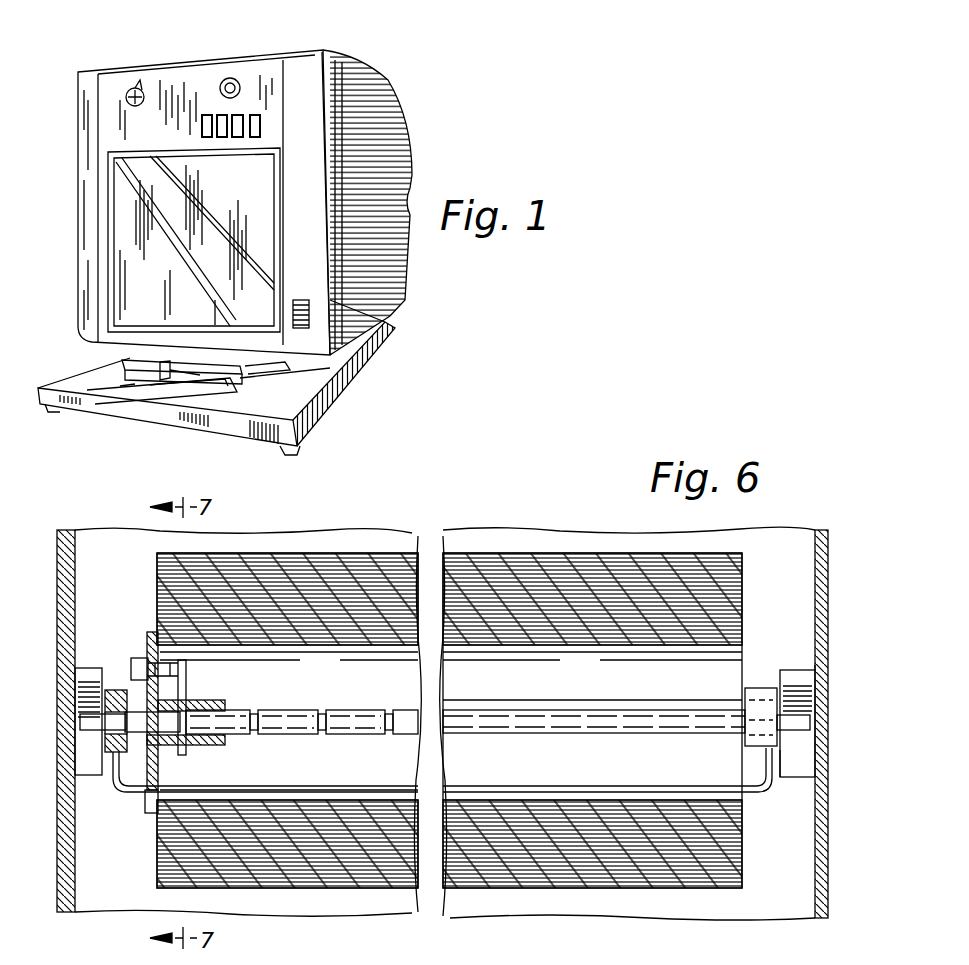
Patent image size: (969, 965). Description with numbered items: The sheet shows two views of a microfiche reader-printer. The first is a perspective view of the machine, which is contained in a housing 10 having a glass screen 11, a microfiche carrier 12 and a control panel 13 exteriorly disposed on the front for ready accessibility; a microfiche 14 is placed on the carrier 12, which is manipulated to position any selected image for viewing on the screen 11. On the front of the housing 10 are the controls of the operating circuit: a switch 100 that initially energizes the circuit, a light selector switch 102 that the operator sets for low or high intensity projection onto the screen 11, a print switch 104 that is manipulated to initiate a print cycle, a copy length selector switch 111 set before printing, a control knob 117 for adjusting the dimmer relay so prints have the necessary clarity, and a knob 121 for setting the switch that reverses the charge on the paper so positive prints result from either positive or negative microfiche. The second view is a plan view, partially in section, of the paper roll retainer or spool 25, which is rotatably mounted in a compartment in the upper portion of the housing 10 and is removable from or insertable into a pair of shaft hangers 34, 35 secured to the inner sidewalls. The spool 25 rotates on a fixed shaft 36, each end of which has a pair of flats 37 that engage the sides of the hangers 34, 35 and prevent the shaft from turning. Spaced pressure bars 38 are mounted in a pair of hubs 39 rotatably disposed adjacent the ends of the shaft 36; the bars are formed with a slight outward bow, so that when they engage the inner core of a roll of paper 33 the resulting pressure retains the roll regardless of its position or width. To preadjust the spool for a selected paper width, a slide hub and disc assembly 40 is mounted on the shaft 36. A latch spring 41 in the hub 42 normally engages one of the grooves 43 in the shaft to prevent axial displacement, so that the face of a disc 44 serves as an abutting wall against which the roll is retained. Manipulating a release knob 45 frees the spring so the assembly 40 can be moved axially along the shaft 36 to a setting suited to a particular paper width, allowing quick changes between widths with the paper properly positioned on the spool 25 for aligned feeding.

In FIG. 1, the housing 10 is at (372, 115).
In FIG. 6, the housing 10 is at (785, 810).
In FIG. 1, the glass screen 11 is at (132, 255).
In FIG. 1, the microfiche carrier 12 is at (195, 392).
In FIG. 1, the control panel 13 is at (164, 88).
In FIG. 1, the microfiche 14 is at (130, 352).
In FIG. 1, the switch 100 is at (262, 118).
In FIG. 1, the light selector switch 102 is at (214, 112).
In FIG. 1, the print switch 104 is at (244, 116).
In FIG. 1, the copy length selector switch 111 is at (200, 130).
In FIG. 1, the control knob 117 is at (233, 80).
In FIG. 1, the knob 121 is at (125, 102).
In FIG. 6, the paper roll retainer or spool 25 is at (538, 553).
In FIG. 6, the roll of paper 33 is at (738, 855).
In FIG. 6, the shaft hanger 34 is at (78, 708).
In FIG. 6, the shaft hanger 35 is at (805, 680).
In FIG. 6, the fixed shaft 36 is at (520, 712).
In FIG. 6, the flats 37 is at (105, 730).
In FIG. 6, the pressure bars 38 is at (280, 790).
In FIG. 6, the hubs 39 is at (95, 752).
In FIG. 6, the slide hub and disc assembly 40 is at (214, 699).
In FIG. 6, the latch spring 41 is at (184, 680).
In FIG. 6, the hub 42 is at (228, 708).
In FIG. 6, the grooves 43 is at (372, 752).
In FIG. 6, the disc 44 is at (150, 785).
In FIG. 6, the release knob 45 is at (140, 658).